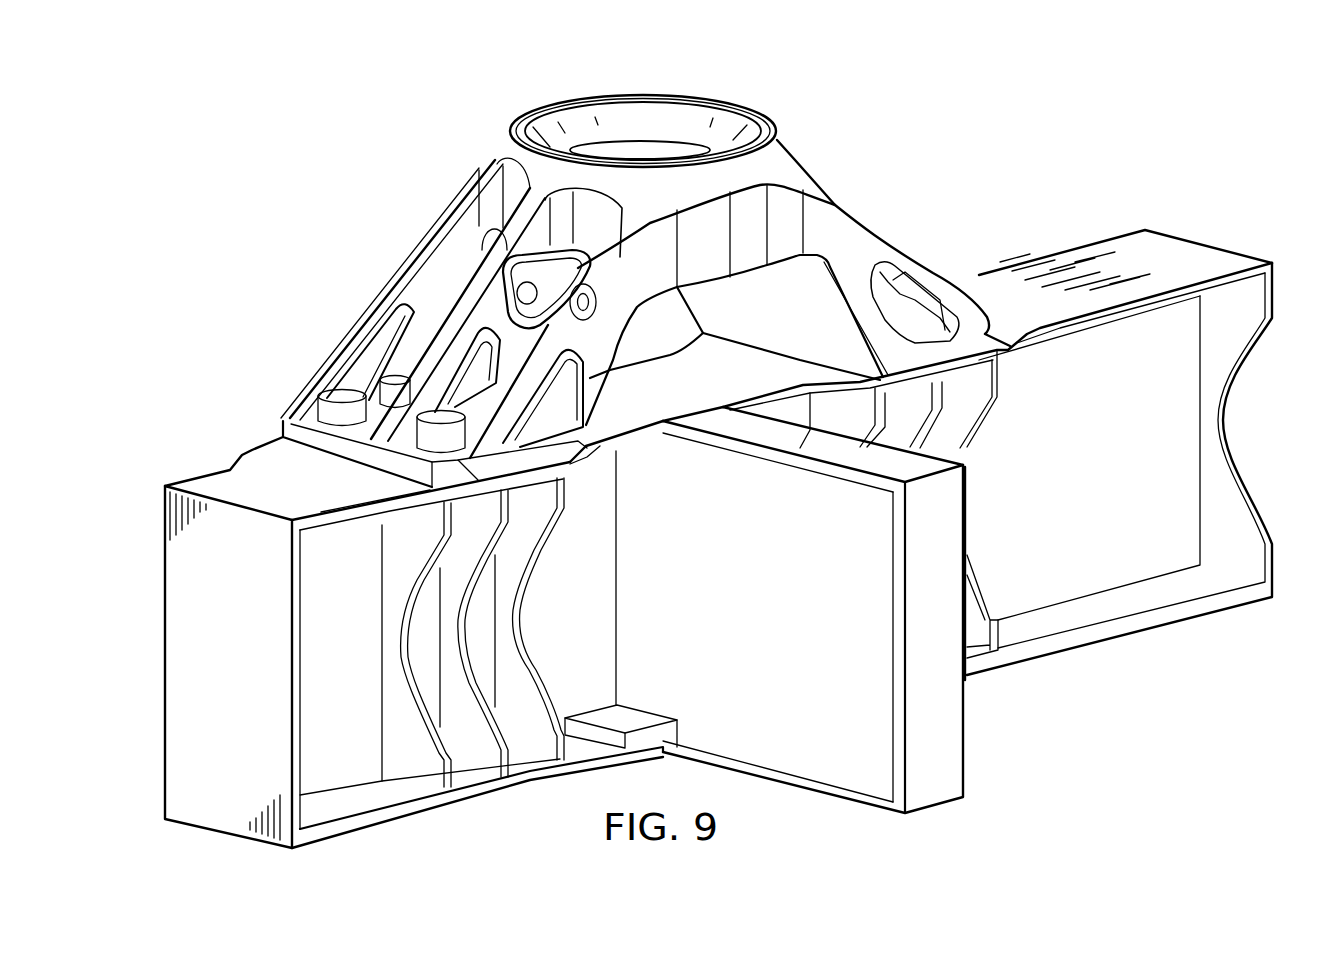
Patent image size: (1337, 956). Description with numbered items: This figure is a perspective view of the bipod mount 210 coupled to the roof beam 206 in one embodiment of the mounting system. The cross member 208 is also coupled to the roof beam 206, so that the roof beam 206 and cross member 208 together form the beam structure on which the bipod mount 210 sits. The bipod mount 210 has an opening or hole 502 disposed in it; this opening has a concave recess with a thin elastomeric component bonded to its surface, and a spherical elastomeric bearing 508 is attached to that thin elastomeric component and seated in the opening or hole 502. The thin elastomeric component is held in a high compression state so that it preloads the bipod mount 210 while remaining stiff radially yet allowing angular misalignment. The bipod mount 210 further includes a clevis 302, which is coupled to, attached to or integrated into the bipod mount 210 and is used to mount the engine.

The opening or hole 502 is at (588, 81).
The spherical elastomeric bearing 508 is at (685, 120).
The clevis 302 is at (505, 293).
The bipod mount 210 is at (866, 222).
The roof beam 206 is at (1195, 240).
The cross member 208 is at (955, 734).